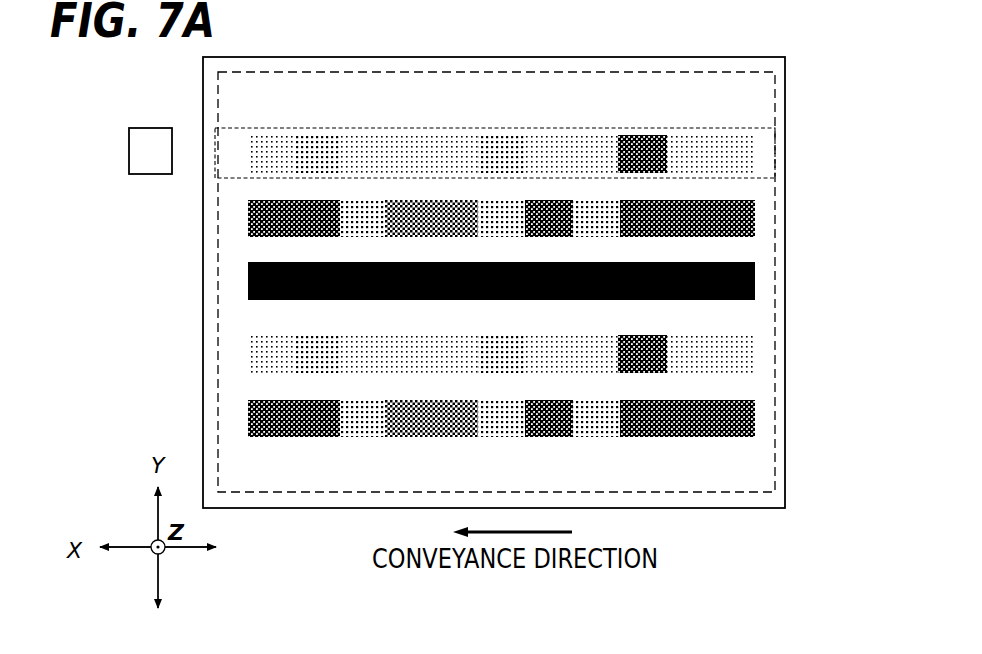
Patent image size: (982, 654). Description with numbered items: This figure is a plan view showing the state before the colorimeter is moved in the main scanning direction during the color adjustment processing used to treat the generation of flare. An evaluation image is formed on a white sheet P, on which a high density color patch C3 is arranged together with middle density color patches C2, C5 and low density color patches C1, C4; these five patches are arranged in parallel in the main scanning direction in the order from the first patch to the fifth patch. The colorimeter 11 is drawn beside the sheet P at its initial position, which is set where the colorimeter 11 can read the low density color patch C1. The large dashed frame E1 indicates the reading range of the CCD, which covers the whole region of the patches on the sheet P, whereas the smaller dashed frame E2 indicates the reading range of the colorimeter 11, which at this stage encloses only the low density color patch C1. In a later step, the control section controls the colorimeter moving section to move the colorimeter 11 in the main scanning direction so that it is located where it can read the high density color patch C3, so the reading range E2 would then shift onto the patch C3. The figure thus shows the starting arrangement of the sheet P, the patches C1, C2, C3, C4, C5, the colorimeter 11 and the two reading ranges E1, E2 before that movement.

The white sheet P is at (788, 83).
The colorimeter 11 is at (128, 153).
The reading range of CCD E1 is at (218, 273).
The reading range of colorimeter E2 is at (233, 180).
The low density color patch C1 is at (755, 155).
The middle density color patch C2 is at (755, 213).
The high density color patch C3 is at (755, 282).
The low density color patch C4 is at (755, 350).
The middle density color patch C5 is at (755, 415).